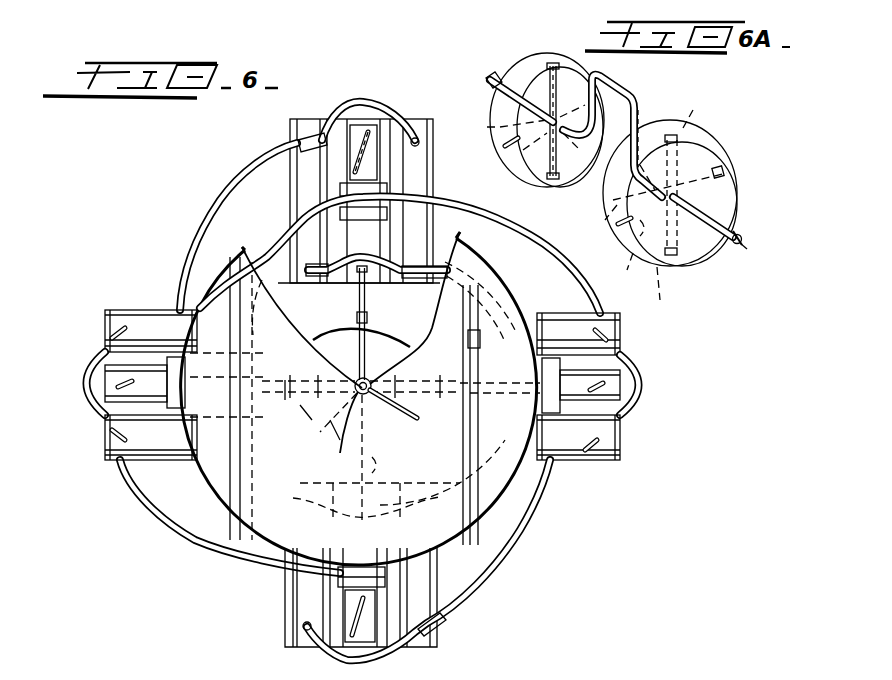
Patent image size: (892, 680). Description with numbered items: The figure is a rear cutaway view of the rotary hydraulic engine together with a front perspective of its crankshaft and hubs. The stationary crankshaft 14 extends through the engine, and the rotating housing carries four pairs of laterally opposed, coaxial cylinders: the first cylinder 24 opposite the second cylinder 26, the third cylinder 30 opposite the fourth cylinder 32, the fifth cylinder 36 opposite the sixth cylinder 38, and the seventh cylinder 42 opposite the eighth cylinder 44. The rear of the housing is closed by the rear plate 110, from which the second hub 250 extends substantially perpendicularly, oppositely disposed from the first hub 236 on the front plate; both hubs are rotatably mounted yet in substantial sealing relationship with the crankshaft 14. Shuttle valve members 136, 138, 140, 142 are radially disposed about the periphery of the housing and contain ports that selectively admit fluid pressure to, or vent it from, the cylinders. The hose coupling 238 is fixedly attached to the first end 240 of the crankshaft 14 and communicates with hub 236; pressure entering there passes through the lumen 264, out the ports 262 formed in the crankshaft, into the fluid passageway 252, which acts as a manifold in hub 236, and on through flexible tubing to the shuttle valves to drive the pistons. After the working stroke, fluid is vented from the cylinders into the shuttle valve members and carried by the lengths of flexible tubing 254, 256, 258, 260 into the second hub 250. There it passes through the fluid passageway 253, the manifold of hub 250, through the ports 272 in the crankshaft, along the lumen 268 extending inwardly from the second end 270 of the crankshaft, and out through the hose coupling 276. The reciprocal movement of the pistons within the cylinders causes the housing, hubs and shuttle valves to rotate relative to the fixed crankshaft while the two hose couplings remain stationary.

In FIG. 6, the crankshaft 14 is at (398, 408).
In FIG. 6, the first cylinder 24 is at (302, 120).
In FIG. 6, the second cylinder 26 is at (298, 645).
In FIG. 6, the third cylinder 30 is at (403, 117).
In FIG. 6, the fourth cylinder 32 is at (425, 645).
In FIG. 6, the fifth cylinder 36 is at (620, 337).
In FIG. 6, the sixth cylinder 38 is at (105, 322).
In FIG. 6, the seventh cylinder 42 is at (620, 443).
In FIG. 6, the eighth cylinder 44 is at (105, 437).
In FIG. 6, the rear plate member 110 is at (274, 250).
In FIG. 6, the first shuttle valve member 136 is at (389, 102).
In FIG. 6, the second shuttle valve member 138 is at (620, 388).
In FIG. 6, the third shuttle valve member 140 is at (355, 650).
In FIG. 6, the fourth shuttle valve member 142 is at (105, 387).
In FIG. 6A, the hub 236 is at (720, 146).
In FIG. 6A, the hose coupling 238 is at (742, 247).
In FIG. 6A, the first end 240 is at (718, 242).
In FIG. 6, the second hub 250 is at (323, 333).
In FIG. 6A, the second hub 250 is at (500, 100).
In FIG. 6A, the fluid passageway 252 is at (693, 112).
In FIG. 6, the fluid passageway 253 is at (372, 332).
In FIG. 6A, the fluid passageway 253 is at (570, 60).
In FIG. 6, the flexible tubing member 254 is at (358, 304).
In FIG. 6, the flexible tubing member 256 is at (413, 347).
In FIG. 6, the flexible tubing member 258 is at (379, 460).
In FIG. 6, the flexible tubing member 260 is at (290, 409).
In FIG. 6A, the ports 262 is at (604, 214).
In FIG. 6A, the lumen 264 is at (755, 219).
In FIG. 6, the lumen 268 is at (350, 458).
In FIG. 6A, the lumen 268 is at (530, 78).
In FIG. 6, the second end 270 is at (408, 398).
In FIG. 6A, the second end 270 is at (500, 78).
In FIG. 6A, the ports 272 is at (514, 166).
In FIG. 6, the hose coupling 276 is at (330, 431).
In FIG. 6A, the hose coupling 276 is at (475, 68).